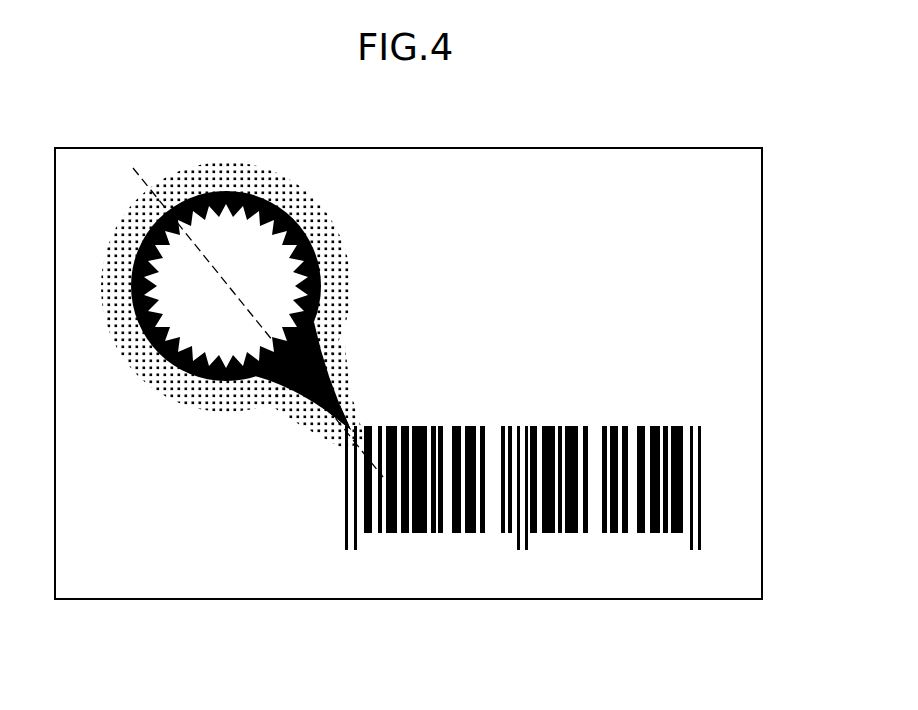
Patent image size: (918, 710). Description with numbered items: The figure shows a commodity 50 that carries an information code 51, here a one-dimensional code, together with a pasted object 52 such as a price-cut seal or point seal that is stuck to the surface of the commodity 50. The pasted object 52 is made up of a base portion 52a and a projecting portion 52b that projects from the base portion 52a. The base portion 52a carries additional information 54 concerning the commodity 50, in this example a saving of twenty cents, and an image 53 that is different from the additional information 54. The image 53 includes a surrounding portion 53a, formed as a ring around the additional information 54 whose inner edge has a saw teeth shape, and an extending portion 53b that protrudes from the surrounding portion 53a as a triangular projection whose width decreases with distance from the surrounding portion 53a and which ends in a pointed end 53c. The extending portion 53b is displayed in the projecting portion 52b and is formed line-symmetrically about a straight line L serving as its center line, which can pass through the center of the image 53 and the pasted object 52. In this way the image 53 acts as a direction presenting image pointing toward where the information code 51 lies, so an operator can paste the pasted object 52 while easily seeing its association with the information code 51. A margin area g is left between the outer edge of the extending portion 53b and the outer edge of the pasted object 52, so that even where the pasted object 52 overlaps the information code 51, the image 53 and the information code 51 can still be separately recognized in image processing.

The commodity 50 is at (632, 148).
The information code 51 is at (527, 576).
The pasted object 52 is at (264, 280).
The base portion 52a is at (342, 260).
The projecting portion 52b is at (343, 402).
The image 53 is at (263, 271).
The surrounding portion 53a is at (240, 191).
The extending portion 53b is at (308, 398).
The pointed end 53c is at (352, 431).
The additional information 54 is at (174, 284).
The margin area g is at (122, 342).
The straight line L is at (150, 165).